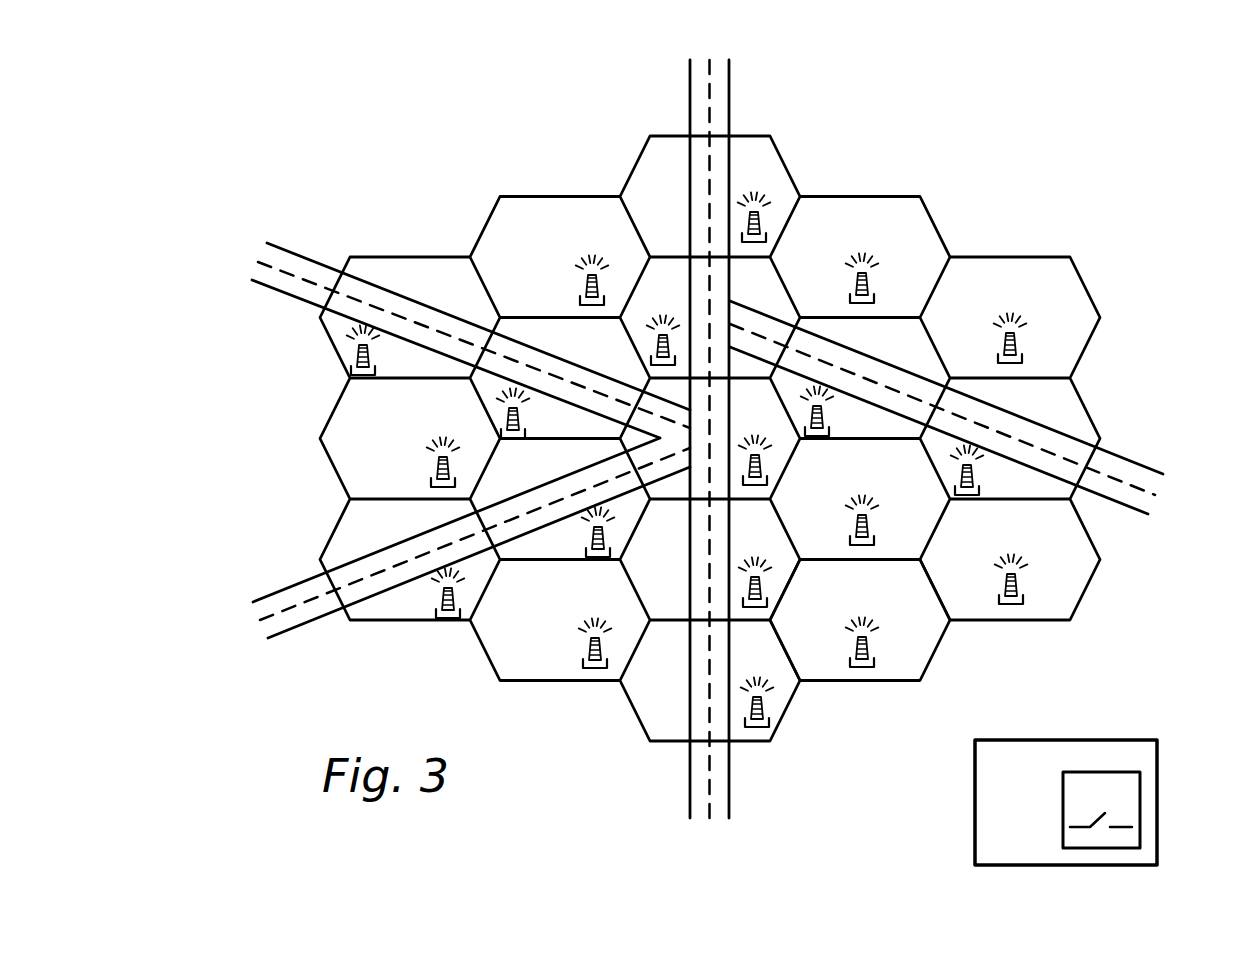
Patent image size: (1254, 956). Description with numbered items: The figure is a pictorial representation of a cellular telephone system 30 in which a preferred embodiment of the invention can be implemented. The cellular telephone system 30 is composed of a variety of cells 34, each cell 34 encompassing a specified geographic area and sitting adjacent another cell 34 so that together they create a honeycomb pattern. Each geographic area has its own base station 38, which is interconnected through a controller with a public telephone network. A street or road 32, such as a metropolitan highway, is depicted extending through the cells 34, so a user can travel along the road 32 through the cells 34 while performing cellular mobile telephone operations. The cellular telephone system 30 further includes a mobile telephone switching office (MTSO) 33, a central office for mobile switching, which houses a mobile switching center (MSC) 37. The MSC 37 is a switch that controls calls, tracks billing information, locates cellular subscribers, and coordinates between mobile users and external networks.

The cellular telephone system 30 is at (710, 396).
The street or road 32 is at (289, 243).
The cell 34 is at (932, 665).
The base station 38 is at (778, 704).
The mobile telephone switching office (MTSO) 33 is at (1157, 760).
The mobile switching center (MSC) 37 is at (1140, 810).